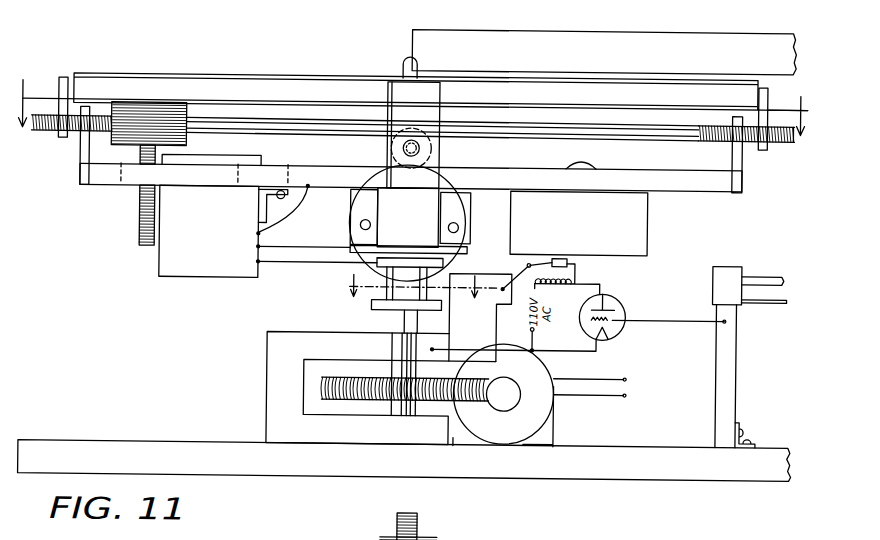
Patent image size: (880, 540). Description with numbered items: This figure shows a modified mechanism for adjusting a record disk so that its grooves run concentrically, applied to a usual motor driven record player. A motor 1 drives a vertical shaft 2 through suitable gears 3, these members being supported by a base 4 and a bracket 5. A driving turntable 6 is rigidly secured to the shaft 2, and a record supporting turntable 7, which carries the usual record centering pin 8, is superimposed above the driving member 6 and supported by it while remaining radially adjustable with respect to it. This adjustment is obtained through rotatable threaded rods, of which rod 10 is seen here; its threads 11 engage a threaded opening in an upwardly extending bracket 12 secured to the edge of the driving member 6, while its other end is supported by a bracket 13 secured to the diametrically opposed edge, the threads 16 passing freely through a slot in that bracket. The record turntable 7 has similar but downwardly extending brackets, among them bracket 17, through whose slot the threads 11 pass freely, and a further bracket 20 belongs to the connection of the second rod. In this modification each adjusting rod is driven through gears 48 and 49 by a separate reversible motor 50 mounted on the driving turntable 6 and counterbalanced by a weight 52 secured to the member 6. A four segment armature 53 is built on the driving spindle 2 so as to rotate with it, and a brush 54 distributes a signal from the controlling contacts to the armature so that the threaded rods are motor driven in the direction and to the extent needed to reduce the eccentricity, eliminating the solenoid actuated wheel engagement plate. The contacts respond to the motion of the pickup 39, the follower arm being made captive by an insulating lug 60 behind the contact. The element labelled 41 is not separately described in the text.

The motor 1 is at (532, 412).
The vertical shaft 2 is at (404, 323).
The gears 3 is at (500, 402).
The base 4 is at (153, 446).
The bracket 5 is at (268, 376).
The driving turntable 6 is at (496, 170).
The record supporting turntable 7 is at (216, 79).
The record centering pin 8 is at (401, 69).
The rotatable rod 10 is at (642, 137).
The threads 11 is at (40, 137).
The upwardly extending bracket 12 is at (80, 152).
The bracket 13 is at (731, 154).
The threads 16 is at (776, 139).
The downwardly extending bracket 17 is at (60, 80).
The bracket 20 is at (440, 537).
The pickup 39 is at (604, 52).
The arm 41 is at (769, 274).
The gear 48 is at (139, 232).
The gear 49 is at (186, 144).
The reversible motor 50 is at (199, 288).
The weight 52 is at (633, 219).
The four segment armature 53 is at (363, 305).
The brush 54 is at (447, 293).
The insulating lug 60 is at (733, 290).